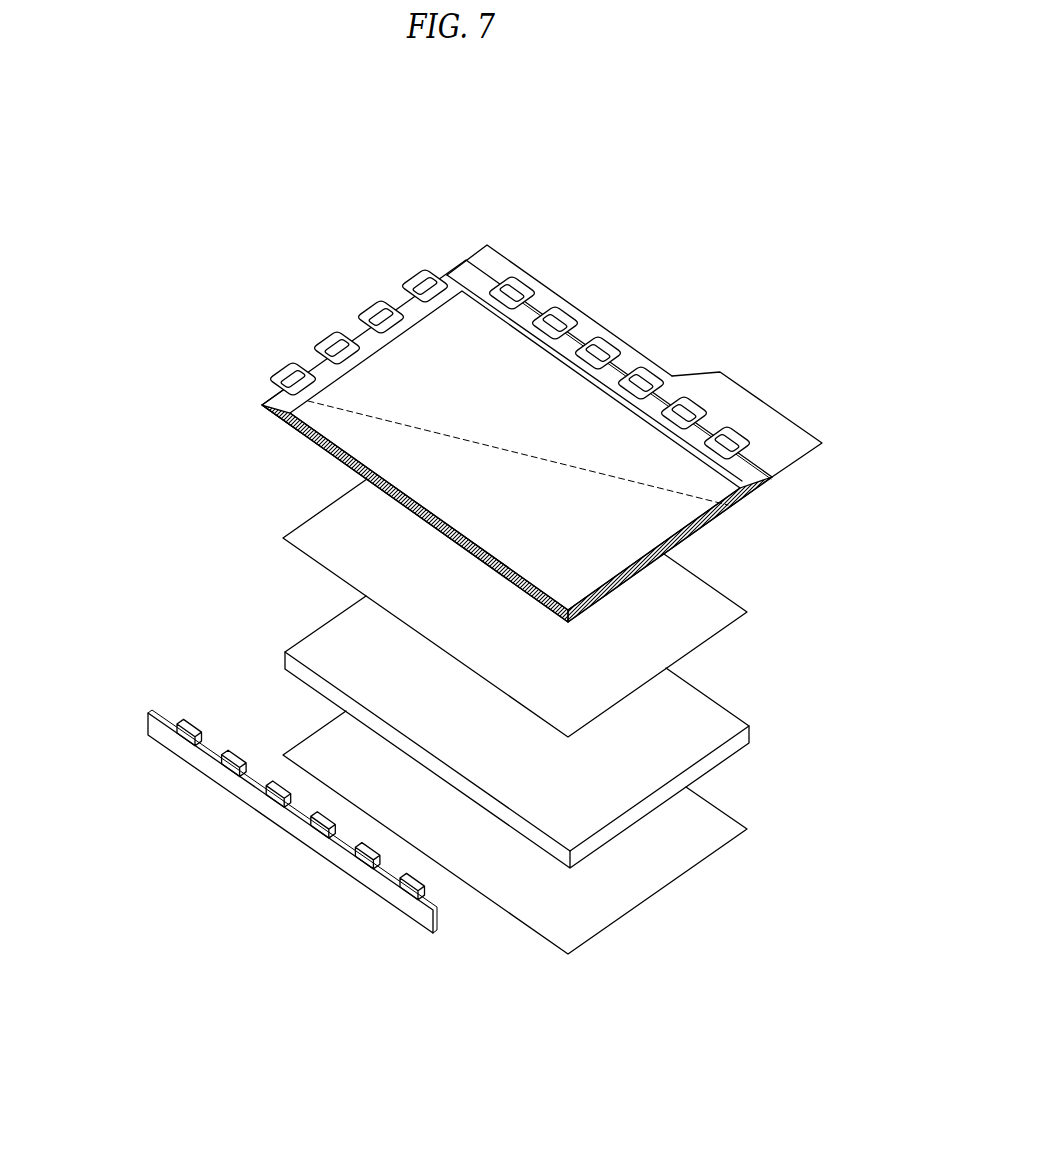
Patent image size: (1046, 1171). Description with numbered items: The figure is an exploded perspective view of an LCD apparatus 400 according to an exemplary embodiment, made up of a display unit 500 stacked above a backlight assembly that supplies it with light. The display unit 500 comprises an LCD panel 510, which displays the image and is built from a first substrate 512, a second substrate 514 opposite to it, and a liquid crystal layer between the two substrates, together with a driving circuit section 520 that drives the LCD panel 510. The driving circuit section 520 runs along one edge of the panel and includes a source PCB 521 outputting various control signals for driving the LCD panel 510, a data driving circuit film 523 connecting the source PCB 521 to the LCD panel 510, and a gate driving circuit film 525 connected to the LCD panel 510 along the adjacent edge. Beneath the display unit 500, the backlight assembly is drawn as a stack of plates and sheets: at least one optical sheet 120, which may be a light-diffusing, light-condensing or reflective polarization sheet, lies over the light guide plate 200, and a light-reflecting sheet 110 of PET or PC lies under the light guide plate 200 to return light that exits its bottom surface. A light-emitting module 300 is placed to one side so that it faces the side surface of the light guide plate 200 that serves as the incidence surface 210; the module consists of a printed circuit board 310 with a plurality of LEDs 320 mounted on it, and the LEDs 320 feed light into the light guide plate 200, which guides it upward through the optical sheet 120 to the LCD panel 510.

The LCD apparatus 400 is at (577, 203).
The display unit 500 is at (318, 291).
The LCD panel 510 is at (265, 483).
The first substrate 512 is at (268, 406).
The second substrate 514 is at (318, 440).
The driving circuit section 520 is at (588, 308).
The source PCB 521 is at (800, 437).
The data driving circuit film 523 is at (689, 397).
The gate driving circuit film 525 is at (421, 276).
The light guide plate 200 is at (311, 606).
The incidence surface 210 is at (284, 667).
The optical sheet 120 is at (722, 594).
The light-reflecting sheet 110 is at (655, 897).
The light-emitting module 300 is at (130, 720).
The printed circuit board 310 is at (203, 763).
The LEDs 320 is at (180, 728).